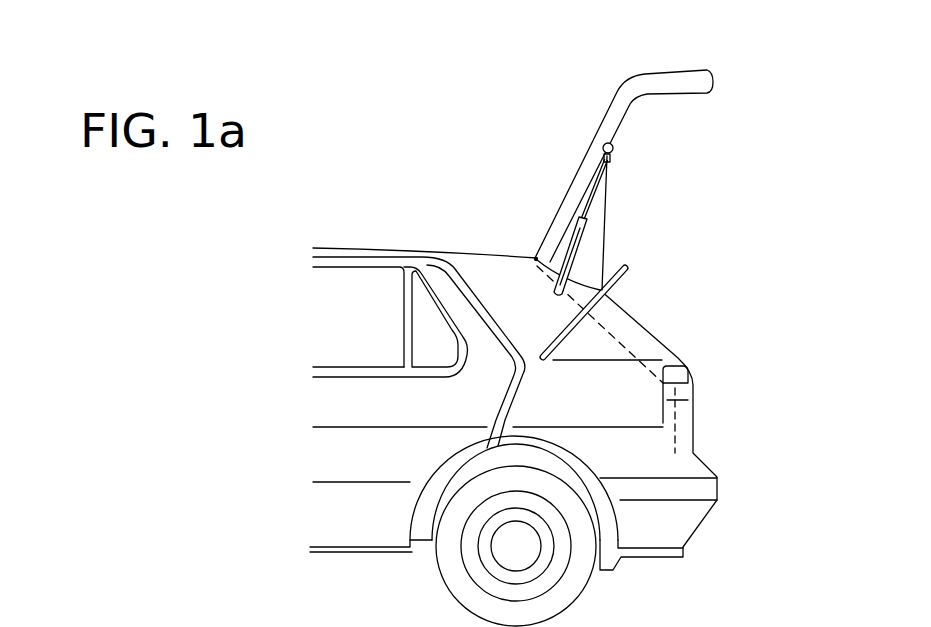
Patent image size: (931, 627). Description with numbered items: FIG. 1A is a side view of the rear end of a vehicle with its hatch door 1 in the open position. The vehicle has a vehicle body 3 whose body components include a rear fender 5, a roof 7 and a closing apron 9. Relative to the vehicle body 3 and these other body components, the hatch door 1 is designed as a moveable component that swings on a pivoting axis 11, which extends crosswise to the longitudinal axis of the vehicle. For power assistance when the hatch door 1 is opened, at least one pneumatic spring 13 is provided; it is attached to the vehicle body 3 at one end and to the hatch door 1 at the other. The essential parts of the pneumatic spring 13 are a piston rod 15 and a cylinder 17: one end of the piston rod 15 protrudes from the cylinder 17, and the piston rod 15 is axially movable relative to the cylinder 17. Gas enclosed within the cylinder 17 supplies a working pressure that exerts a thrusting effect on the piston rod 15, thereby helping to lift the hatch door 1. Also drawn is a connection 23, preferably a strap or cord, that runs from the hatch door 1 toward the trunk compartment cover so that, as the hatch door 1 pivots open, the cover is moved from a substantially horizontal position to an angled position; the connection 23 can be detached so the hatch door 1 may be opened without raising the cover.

The hatch door 1 is at (708, 68).
The vehicle body 3 is at (265, 440).
The rear fender 5 is at (620, 443).
The roof 7 is at (445, 250).
The closing apron 9 is at (693, 440).
The pivoting axis 11 is at (535, 258).
The pneumatic spring 13 is at (593, 257).
The piston rod 15 is at (588, 207).
The cylinder 17 is at (580, 284).
The connection 23 is at (607, 233).